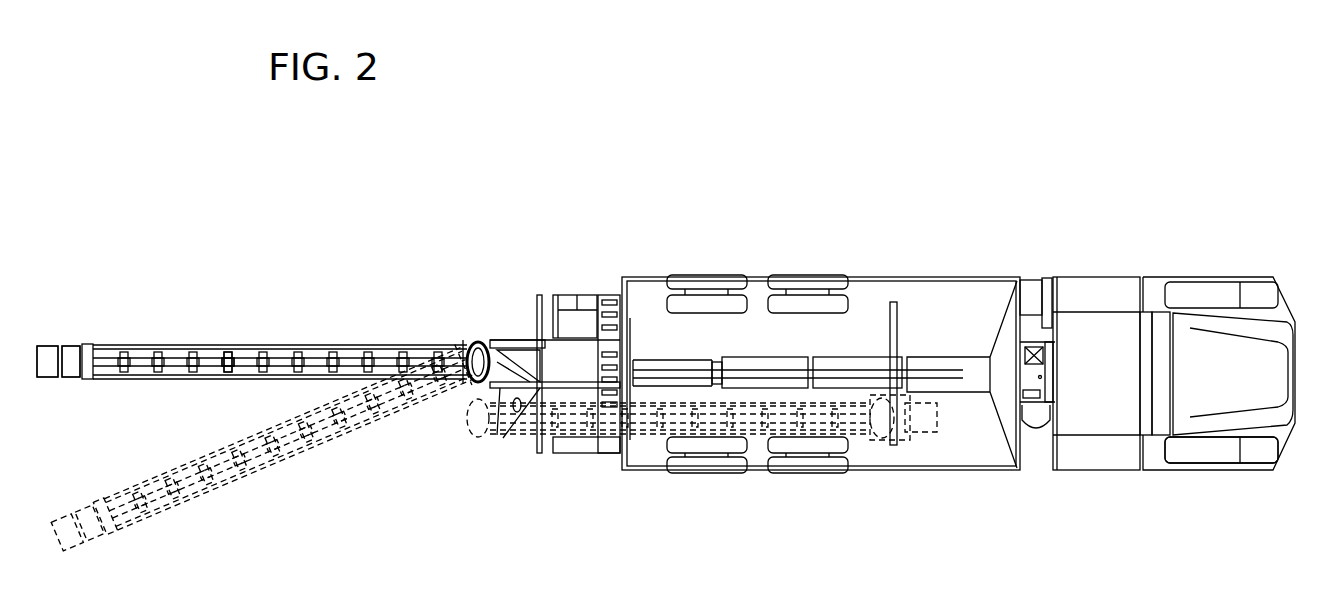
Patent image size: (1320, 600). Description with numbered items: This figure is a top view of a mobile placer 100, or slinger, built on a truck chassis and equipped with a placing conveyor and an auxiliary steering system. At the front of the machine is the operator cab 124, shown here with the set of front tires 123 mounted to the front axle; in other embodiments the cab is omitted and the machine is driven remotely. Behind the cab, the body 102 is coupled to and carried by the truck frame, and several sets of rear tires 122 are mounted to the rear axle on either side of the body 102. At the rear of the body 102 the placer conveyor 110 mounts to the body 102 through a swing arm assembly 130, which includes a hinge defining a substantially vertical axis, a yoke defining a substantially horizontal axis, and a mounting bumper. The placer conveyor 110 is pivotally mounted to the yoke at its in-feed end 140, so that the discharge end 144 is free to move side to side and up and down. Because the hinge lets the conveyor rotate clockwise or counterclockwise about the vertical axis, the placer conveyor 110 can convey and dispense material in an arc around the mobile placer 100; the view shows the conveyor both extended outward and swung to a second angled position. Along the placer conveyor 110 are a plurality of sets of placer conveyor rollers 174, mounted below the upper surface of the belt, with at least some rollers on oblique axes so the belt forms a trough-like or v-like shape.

The mobile placer 100 is at (740, 200).
The body 102 is at (957, 278).
The placer conveyor 110 is at (165, 325).
The rear tires 122 is at (706, 276).
The front tires 123 is at (1207, 470).
The operator cab 124 is at (1152, 262).
The swing arm assembly 130 is at (523, 340).
The in-feed end 140 is at (439, 380).
The discharge end 144 is at (113, 346).
The placer conveyor rollers 174 is at (228, 346).